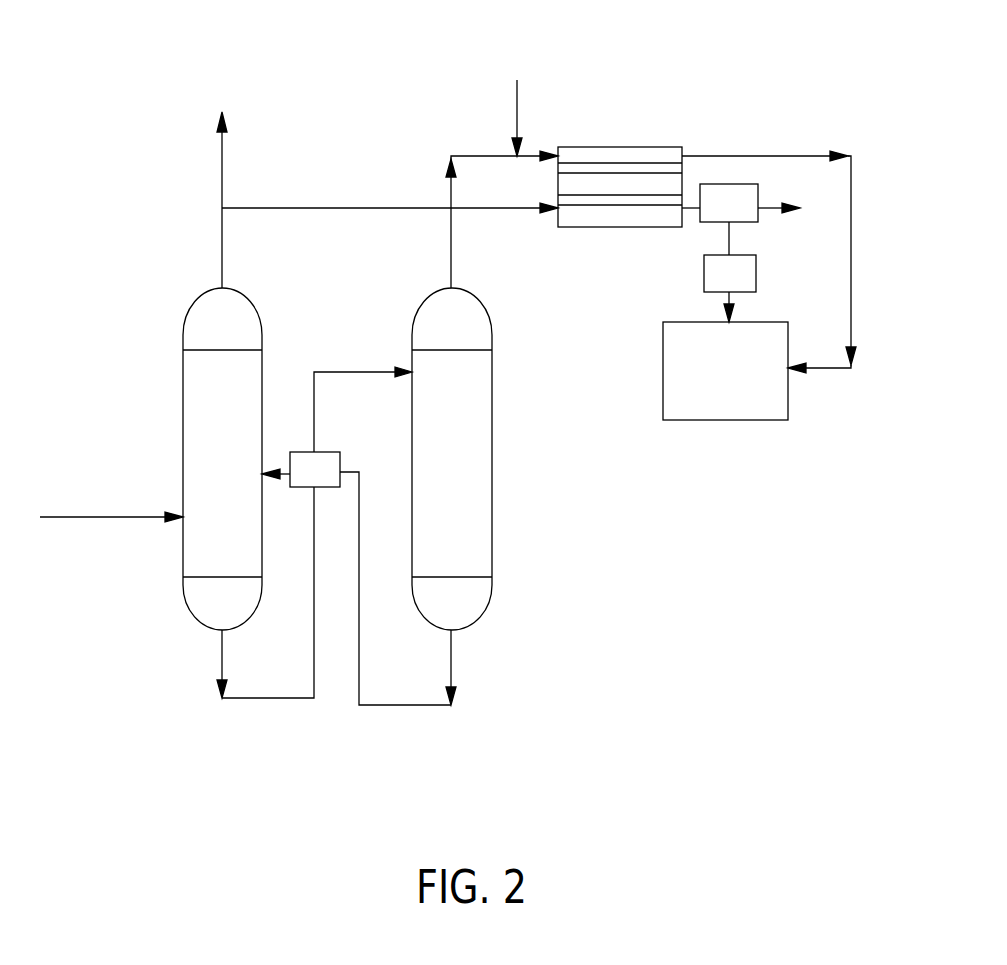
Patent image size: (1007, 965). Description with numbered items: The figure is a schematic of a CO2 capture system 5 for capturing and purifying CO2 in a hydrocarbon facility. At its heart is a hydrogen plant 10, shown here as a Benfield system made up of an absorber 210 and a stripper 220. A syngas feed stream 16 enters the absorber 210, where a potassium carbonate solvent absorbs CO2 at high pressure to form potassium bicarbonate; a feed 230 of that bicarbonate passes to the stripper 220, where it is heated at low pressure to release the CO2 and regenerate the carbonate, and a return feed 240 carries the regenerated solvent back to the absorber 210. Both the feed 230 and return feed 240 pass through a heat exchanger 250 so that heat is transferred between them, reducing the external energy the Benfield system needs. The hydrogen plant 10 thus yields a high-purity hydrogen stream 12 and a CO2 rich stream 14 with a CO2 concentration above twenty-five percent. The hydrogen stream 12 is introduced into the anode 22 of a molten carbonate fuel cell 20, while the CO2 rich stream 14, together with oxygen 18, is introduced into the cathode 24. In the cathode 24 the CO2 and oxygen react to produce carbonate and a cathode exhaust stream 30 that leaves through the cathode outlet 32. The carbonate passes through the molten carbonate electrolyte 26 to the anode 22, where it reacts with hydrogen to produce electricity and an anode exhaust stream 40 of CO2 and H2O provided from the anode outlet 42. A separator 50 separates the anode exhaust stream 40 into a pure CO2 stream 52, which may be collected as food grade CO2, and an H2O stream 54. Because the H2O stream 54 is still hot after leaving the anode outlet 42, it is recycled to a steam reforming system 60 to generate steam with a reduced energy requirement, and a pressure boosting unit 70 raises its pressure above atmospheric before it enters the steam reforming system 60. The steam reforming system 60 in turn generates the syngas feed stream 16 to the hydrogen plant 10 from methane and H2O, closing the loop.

The CO2 capture system 5 is at (178, 148).
The hydrogen plant 10 is at (540, 578).
The high-purity hydrogen stream 12 is at (222, 243).
The CO2 rich stream 14 is at (451, 246).
The feed stream 16 is at (112, 516).
The oxygen 18 is at (517, 115).
The molten carbonate fuel cell 20 is at (641, 84).
The anode 22 is at (572, 220).
The cathode 24 is at (572, 155).
The molten carbonate electrolyte 26 is at (633, 187).
The cathode exhaust stream 30 is at (810, 153).
The cathode outlet 32 is at (688, 153).
The anode exhaust stream 40 is at (697, 210).
The anode outlet 42 is at (685, 197).
The separator 50 is at (728, 193).
The pure CO2 stream 52 is at (765, 207).
The H2O stream 54 is at (731, 246).
The steam reforming system 60 is at (744, 407).
The pressure boosting unit 70 is at (745, 276).
The absorber 210 is at (195, 436).
The stripper 220 is at (421, 416).
The feed 230 is at (272, 700).
The return feed 240 is at (417, 707).
The heat exchanger 250 is at (326, 468).